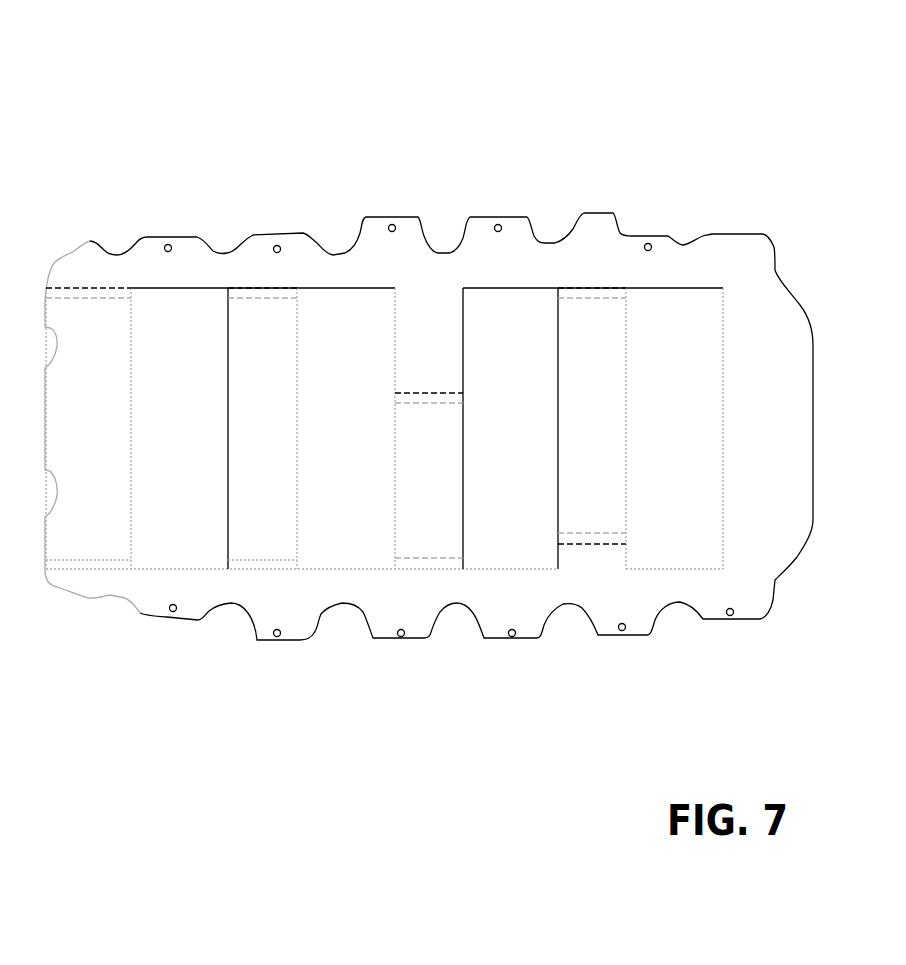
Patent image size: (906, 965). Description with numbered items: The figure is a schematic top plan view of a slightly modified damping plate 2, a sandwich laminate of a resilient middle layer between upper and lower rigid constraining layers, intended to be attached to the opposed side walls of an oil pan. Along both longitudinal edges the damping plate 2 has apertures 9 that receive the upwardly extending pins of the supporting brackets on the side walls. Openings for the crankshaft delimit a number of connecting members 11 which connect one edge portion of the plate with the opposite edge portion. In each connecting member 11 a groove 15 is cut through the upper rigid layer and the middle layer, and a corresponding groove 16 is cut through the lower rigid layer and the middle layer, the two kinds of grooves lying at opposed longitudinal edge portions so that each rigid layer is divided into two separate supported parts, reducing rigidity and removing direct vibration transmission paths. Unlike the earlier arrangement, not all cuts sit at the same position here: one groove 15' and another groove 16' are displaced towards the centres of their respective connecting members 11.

The damping plate 2 is at (458, 185).
The apertures 9 is at (170, 240).
The connecting members 11 is at (593, 380).
The groove 15 is at (170, 648).
The groove 15' is at (582, 549).
The groove 16 is at (171, 194).
The groove 16' is at (531, 318).